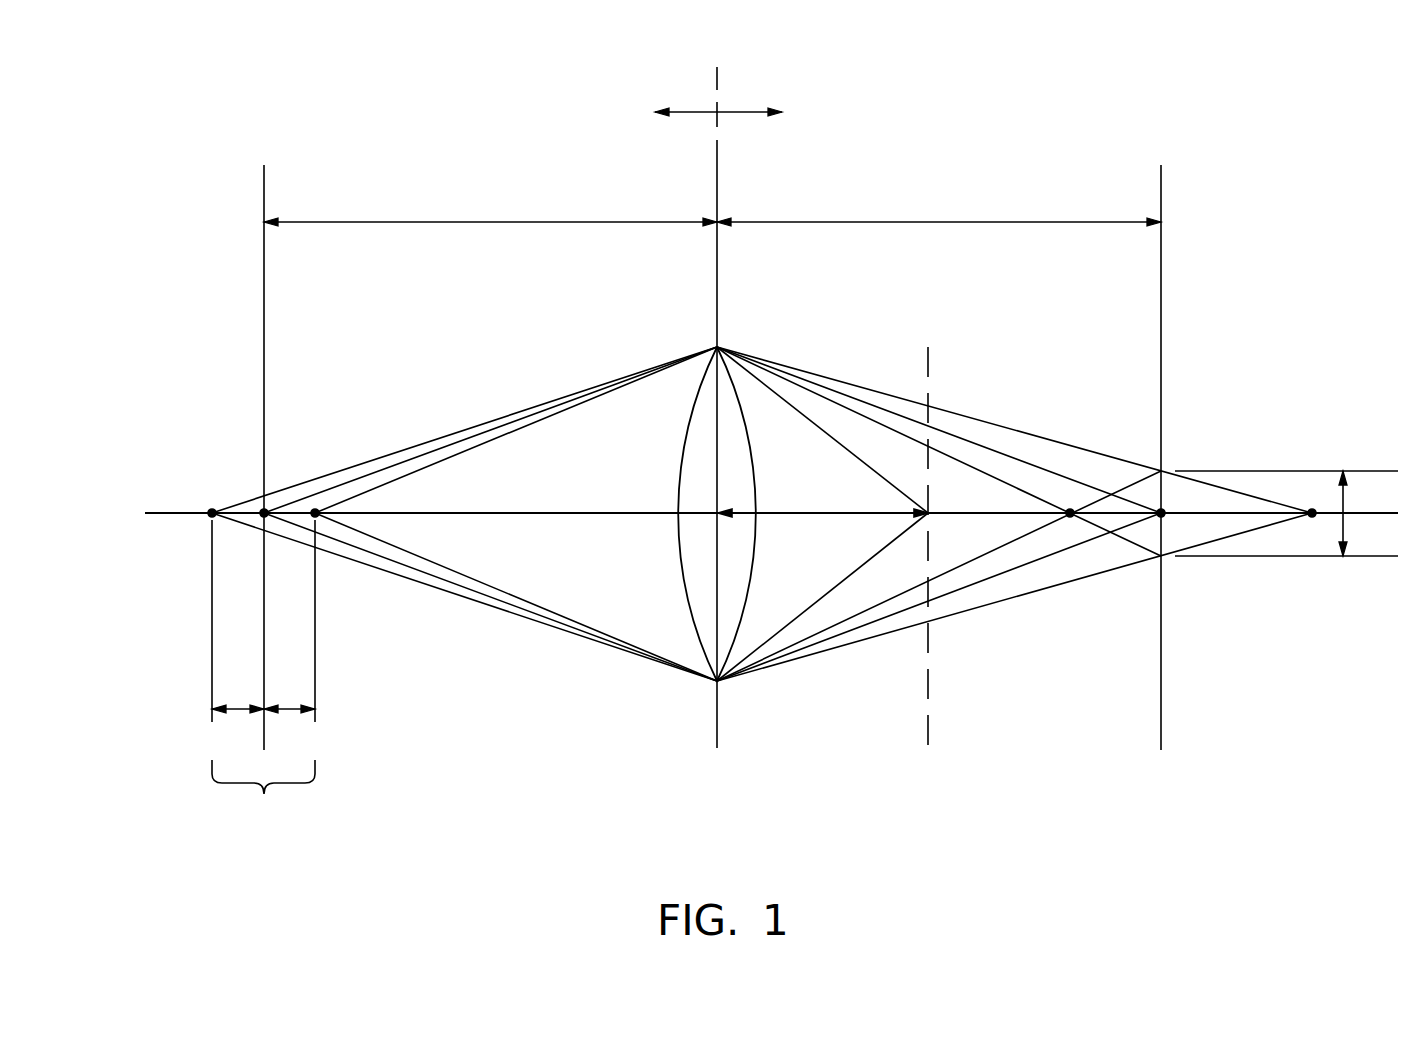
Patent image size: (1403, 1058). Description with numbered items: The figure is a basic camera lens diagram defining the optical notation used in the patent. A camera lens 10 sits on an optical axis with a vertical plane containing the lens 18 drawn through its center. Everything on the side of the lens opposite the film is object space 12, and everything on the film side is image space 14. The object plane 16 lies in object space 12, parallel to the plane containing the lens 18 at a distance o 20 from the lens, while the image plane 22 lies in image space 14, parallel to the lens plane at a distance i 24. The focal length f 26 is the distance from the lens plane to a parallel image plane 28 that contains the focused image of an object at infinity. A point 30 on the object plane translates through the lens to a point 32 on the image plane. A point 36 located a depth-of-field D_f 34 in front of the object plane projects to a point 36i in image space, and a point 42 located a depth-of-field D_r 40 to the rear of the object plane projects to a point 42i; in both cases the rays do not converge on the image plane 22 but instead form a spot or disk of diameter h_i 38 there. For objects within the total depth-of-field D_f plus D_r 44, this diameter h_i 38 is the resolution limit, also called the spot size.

The camera lens 10 is at (685, 627).
The object space 12 is at (663, 112).
The image space 14 is at (772, 112).
The object plane 16 is at (265, 183).
The plane containing the lens 18 is at (718, 307).
The distance o 20 is at (490, 223).
The image plane 22 is at (1162, 340).
The distance i 24 is at (939, 220).
The focal length f 26 is at (822, 514).
The parallel image plane 28 is at (928, 660).
The point on the object plane 30 is at (261, 506).
The point on the image plane 32 is at (1160, 518).
The depth-of-field in front of the object 34 is at (289, 635).
The point in front of the object plane 36 is at (316, 507).
The spot diameter h_i 38 is at (1340, 503).
The depth-of-field to the rear of the object 40 is at (238, 635).
The point to the rear of the object plane 42 is at (210, 516).
The total depth-of-field 44 is at (263, 794).
The image point of rear point 42i is at (1070, 508).
The image point of front point 36i is at (1313, 518).